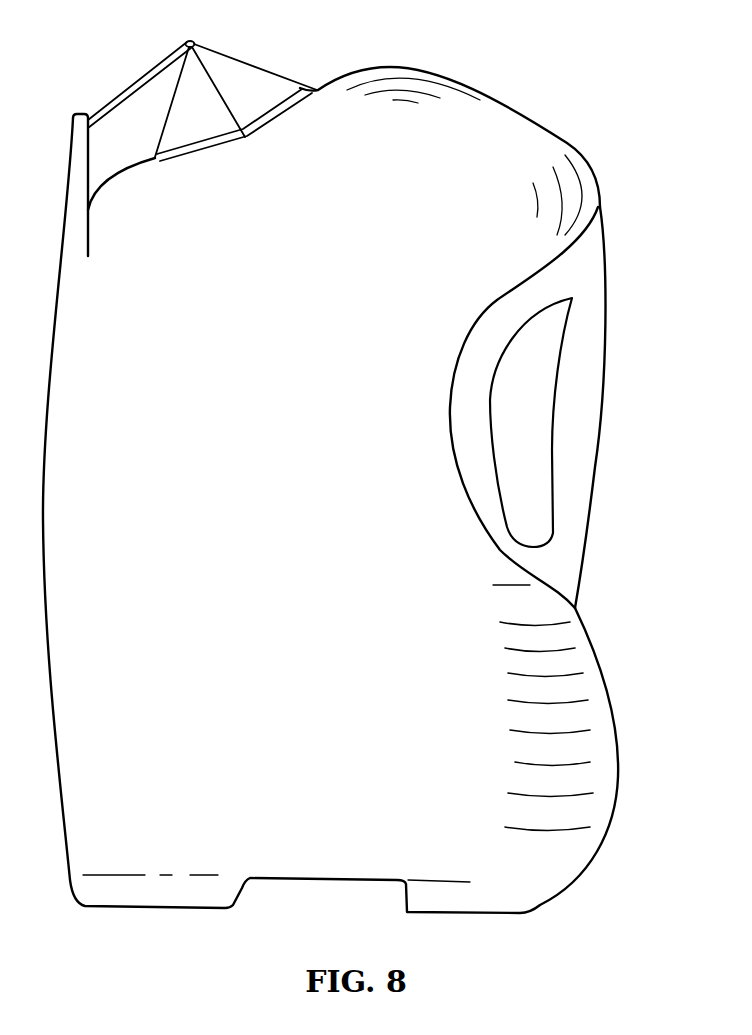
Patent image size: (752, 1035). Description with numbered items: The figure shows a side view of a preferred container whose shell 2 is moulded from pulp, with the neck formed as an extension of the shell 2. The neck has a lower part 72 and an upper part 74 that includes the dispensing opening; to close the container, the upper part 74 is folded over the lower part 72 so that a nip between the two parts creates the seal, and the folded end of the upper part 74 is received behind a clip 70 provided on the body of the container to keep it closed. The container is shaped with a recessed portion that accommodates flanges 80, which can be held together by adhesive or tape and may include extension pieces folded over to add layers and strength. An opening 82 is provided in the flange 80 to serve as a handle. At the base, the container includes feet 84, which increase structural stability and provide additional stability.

The shell 2 is at (277, 428).
The clip 70 is at (73, 194).
The lower part 72 is at (235, 63).
The upper part 74 is at (125, 93).
The flanges 80 is at (595, 353).
The opening 82 is at (532, 430).
The feet 84 is at (560, 865).